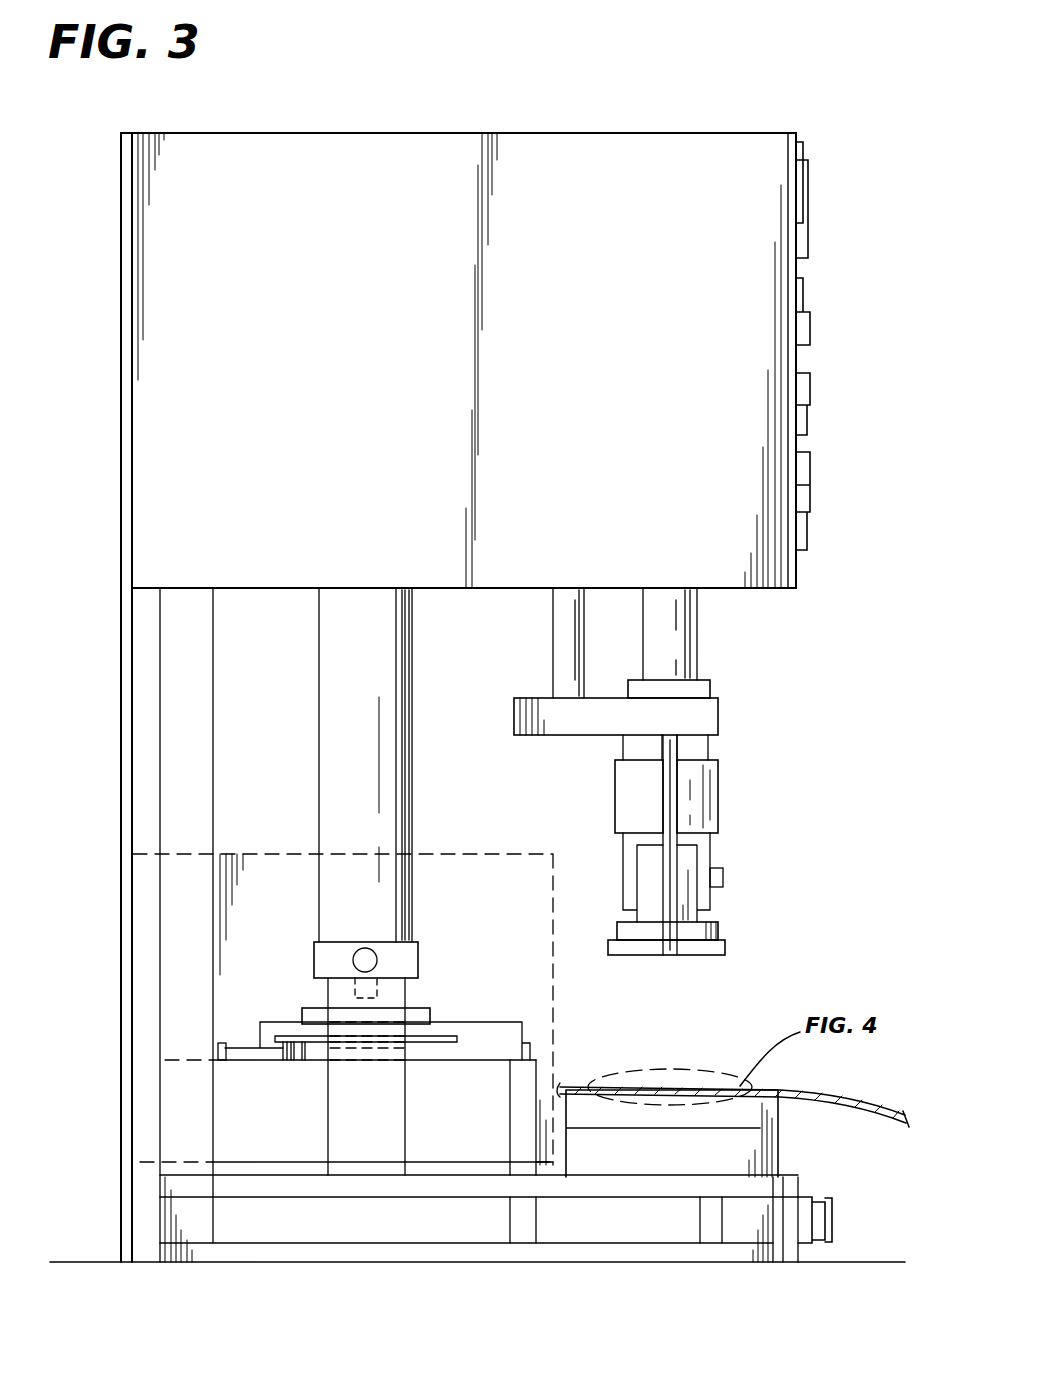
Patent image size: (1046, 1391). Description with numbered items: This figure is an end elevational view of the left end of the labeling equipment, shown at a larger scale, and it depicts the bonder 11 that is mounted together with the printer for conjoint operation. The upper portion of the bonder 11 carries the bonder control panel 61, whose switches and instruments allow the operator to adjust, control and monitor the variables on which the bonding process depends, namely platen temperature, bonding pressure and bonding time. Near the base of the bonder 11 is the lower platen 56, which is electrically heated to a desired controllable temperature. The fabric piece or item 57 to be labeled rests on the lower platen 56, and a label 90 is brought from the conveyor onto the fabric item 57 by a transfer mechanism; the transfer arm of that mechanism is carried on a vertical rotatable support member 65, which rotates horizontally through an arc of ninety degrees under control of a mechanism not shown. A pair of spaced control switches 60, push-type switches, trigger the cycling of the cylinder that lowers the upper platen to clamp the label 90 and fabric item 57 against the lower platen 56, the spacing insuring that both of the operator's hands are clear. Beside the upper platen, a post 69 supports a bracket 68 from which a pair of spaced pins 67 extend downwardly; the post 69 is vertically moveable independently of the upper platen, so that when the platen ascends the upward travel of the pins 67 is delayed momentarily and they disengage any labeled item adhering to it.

The bonder 11 is at (707, 112).
The bonder control panel 61 is at (517, 147).
The post 69 is at (567, 637).
The bracket 68 is at (573, 712).
The spaced pins 67 is at (668, 790).
The vertical rotatable support member 65 is at (397, 910).
The label 90 is at (662, 1082).
The fabric piece or item 57 is at (889, 1068).
The lower platen 56 is at (762, 1113).
The control switches 60 is at (832, 1205).